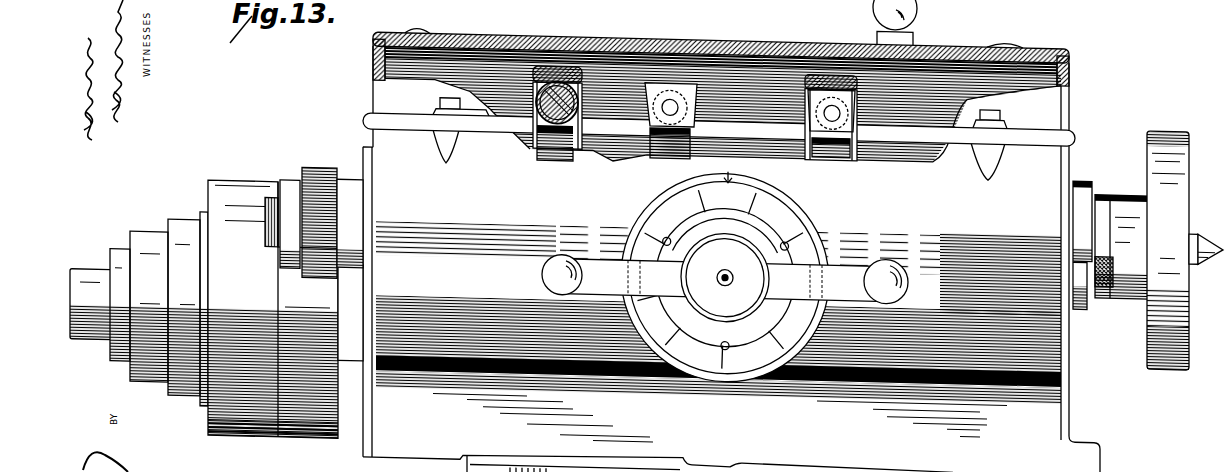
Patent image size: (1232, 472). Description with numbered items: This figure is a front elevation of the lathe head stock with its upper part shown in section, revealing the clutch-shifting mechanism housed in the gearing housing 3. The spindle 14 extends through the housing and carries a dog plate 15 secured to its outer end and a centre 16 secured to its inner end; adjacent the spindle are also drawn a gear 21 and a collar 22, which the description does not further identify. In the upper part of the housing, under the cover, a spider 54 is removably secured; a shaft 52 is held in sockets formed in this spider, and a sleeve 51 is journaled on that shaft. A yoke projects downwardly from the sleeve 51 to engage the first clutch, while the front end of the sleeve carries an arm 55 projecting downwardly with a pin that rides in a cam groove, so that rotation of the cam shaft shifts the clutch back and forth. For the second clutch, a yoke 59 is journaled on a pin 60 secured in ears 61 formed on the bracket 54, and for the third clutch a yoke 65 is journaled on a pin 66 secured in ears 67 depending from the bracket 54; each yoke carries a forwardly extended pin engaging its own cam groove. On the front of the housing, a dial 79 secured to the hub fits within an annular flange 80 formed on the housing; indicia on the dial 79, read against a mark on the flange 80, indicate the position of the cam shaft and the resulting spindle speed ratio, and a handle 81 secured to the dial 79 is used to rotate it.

The gearing housing 3 is at (1043, 364).
The spindle 14 is at (275, 198).
The dog plate 15 is at (1178, 104).
The centre 16 is at (1207, 227).
The gear 21 is at (352, 179).
The collar 22 is at (1083, 157).
The sleeve 51 is at (556, 99).
The shaft 52 is at (573, 96).
The spider 54 is at (627, 62).
The arm 55 is at (553, 141).
The yoke 59 is at (685, 131).
The pin 60 is at (670, 91).
The ears 61 is at (692, 93).
The yoke 65 is at (828, 132).
The pin 66 is at (830, 93).
The ears 67 is at (852, 103).
The dial 79 is at (795, 214).
The annular flange 80 is at (660, 188).
The handle 81 is at (593, 254).